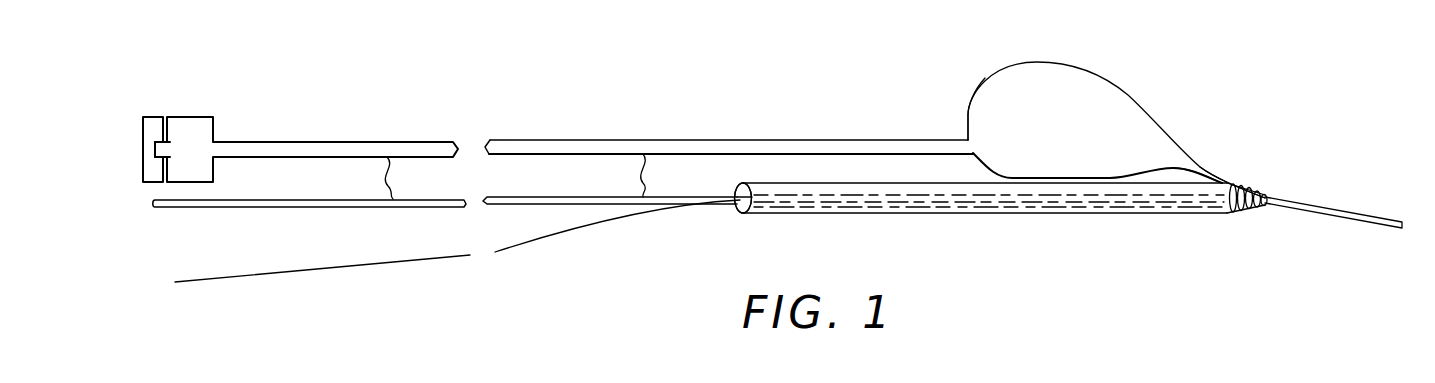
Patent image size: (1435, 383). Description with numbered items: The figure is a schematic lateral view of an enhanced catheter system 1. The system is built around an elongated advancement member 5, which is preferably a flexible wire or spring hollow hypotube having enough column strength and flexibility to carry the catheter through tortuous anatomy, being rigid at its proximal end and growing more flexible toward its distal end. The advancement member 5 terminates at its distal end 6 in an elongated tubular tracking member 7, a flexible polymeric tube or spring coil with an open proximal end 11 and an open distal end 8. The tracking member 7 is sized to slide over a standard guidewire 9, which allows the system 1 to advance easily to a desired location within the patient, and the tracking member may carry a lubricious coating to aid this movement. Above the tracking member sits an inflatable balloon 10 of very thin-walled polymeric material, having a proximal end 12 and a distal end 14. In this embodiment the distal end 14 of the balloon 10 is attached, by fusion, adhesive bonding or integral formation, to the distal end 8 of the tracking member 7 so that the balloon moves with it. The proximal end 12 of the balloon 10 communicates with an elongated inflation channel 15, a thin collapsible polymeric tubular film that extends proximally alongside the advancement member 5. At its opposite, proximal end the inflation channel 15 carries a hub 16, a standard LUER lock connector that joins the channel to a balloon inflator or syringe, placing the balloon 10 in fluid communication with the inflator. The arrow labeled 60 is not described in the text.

The enhanced catheter system 1 is at (1197, 105).
The advancement member 5 is at (320, 207).
The distal end 6 is at (728, 195).
The tubular tracking member 7 is at (975, 213).
The open distal end 8 is at (1238, 213).
The guidewire 9 is at (567, 225).
The inflatable balloon 10 is at (1128, 95).
The open proximal end 11 is at (743, 213).
The proximal end 12 is at (967, 118).
The distal end 14 is at (1197, 163).
The inflation channel 15 is at (682, 148).
The hub 16 is at (213, 123).
The distal tip 60 is at (1322, 200).